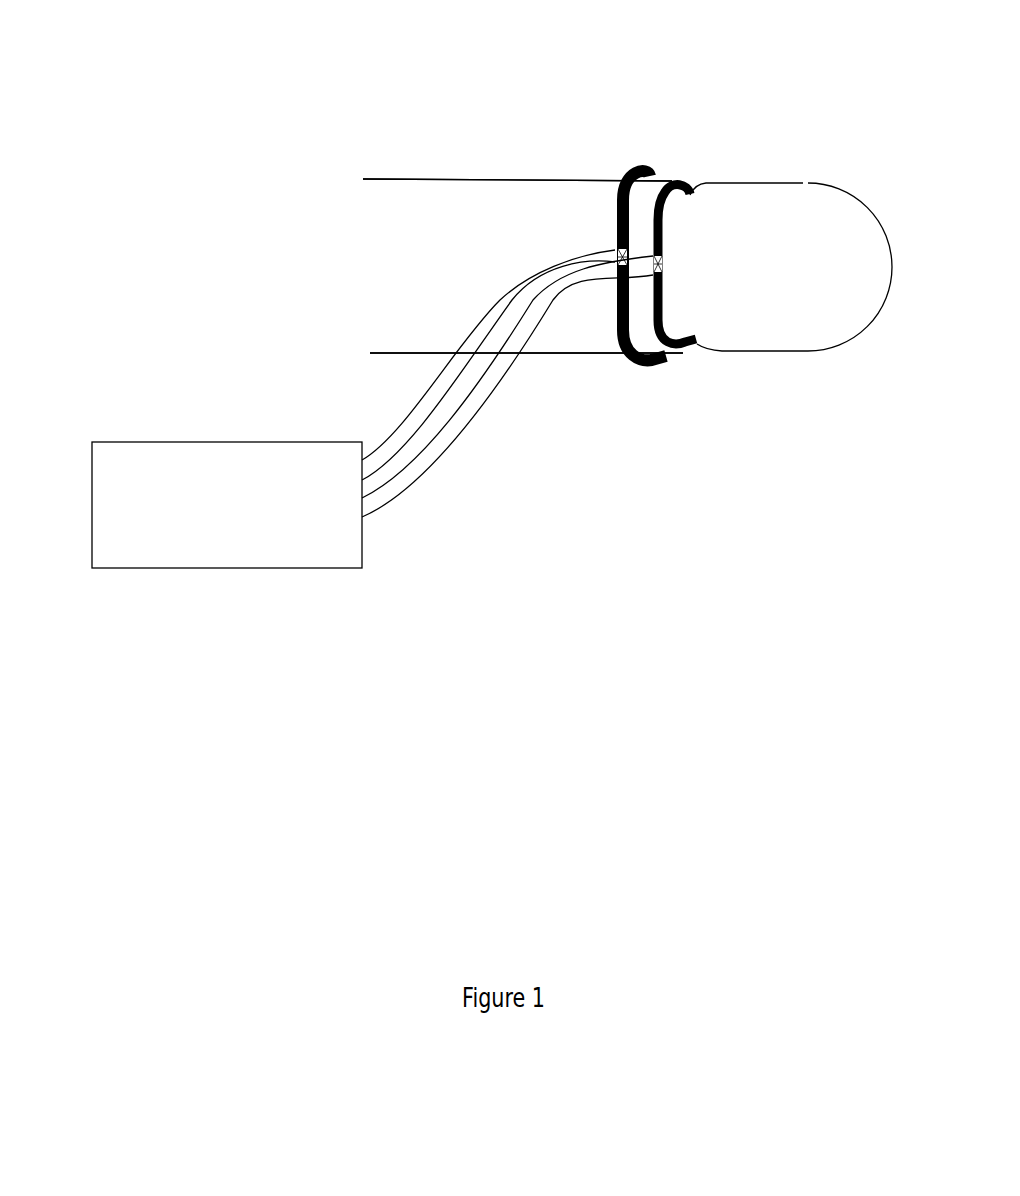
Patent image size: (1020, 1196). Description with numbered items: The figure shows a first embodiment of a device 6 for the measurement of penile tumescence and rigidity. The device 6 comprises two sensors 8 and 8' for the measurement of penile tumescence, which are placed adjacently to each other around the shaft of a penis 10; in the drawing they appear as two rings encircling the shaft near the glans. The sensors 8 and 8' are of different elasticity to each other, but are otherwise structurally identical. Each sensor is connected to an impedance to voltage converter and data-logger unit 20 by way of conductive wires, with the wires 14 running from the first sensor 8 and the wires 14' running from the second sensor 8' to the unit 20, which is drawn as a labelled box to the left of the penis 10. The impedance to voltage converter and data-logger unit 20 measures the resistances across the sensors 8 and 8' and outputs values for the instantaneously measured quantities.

The device 6 is at (176, 227).
The penis 10 is at (484, 211).
The sensor 8 is at (566, 199).
The sensor 8' is at (634, 174).
The conductive wire 14 is at (488, 365).
The conductive wire 14' is at (507, 386).
The impedance to voltage converter and data-logger unit 20 is at (152, 422).